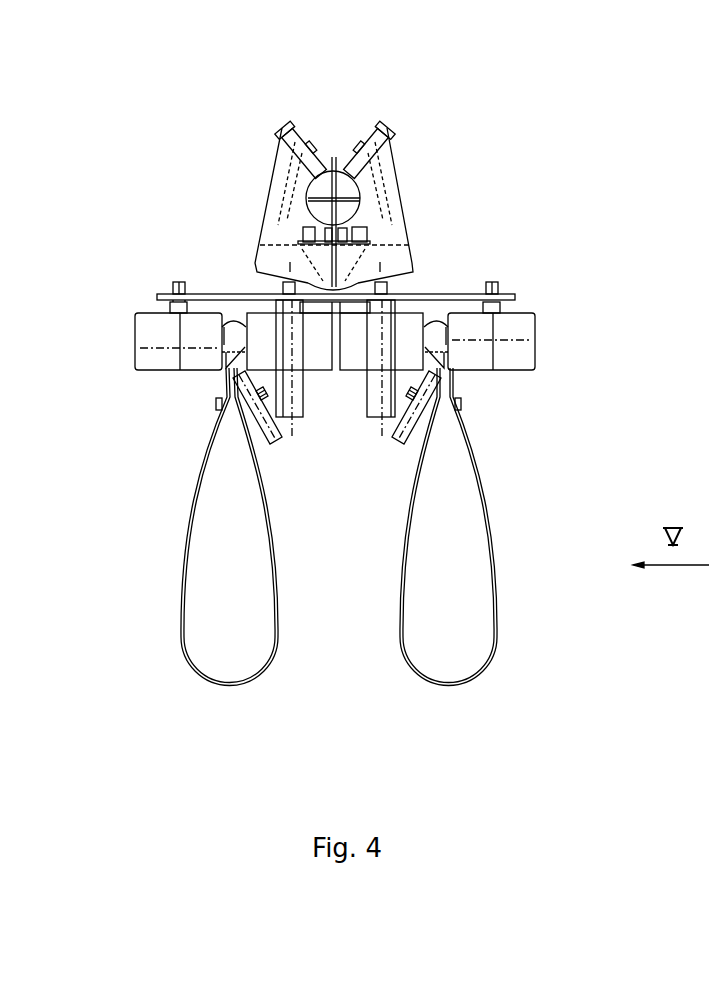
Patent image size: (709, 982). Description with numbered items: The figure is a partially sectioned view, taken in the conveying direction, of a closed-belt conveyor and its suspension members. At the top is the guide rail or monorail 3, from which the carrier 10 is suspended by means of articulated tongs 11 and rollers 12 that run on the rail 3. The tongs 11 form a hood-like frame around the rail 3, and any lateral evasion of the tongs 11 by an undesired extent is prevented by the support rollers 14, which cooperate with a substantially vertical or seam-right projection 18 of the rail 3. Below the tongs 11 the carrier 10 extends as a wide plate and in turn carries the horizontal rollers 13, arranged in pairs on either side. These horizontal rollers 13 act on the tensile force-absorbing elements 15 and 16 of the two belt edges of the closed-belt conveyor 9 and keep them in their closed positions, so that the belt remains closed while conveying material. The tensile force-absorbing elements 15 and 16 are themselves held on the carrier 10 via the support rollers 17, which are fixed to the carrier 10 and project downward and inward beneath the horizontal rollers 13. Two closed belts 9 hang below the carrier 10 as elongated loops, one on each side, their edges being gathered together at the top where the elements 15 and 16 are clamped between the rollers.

The rail 3 is at (327, 178).
The closed belt 9 is at (193, 492).
The carrier 10 is at (453, 295).
The articulated tongs 11 is at (388, 196).
The rollers 12 is at (292, 127).
The horizontal rollers 13 is at (148, 330).
The support rollers 14 is at (312, 233).
The tensile force-absorbing element 15 is at (237, 362).
The tensile force-absorbing element 16 is at (235, 333).
The support rollers 17 is at (337, 463).
The projection 18 is at (333, 232).